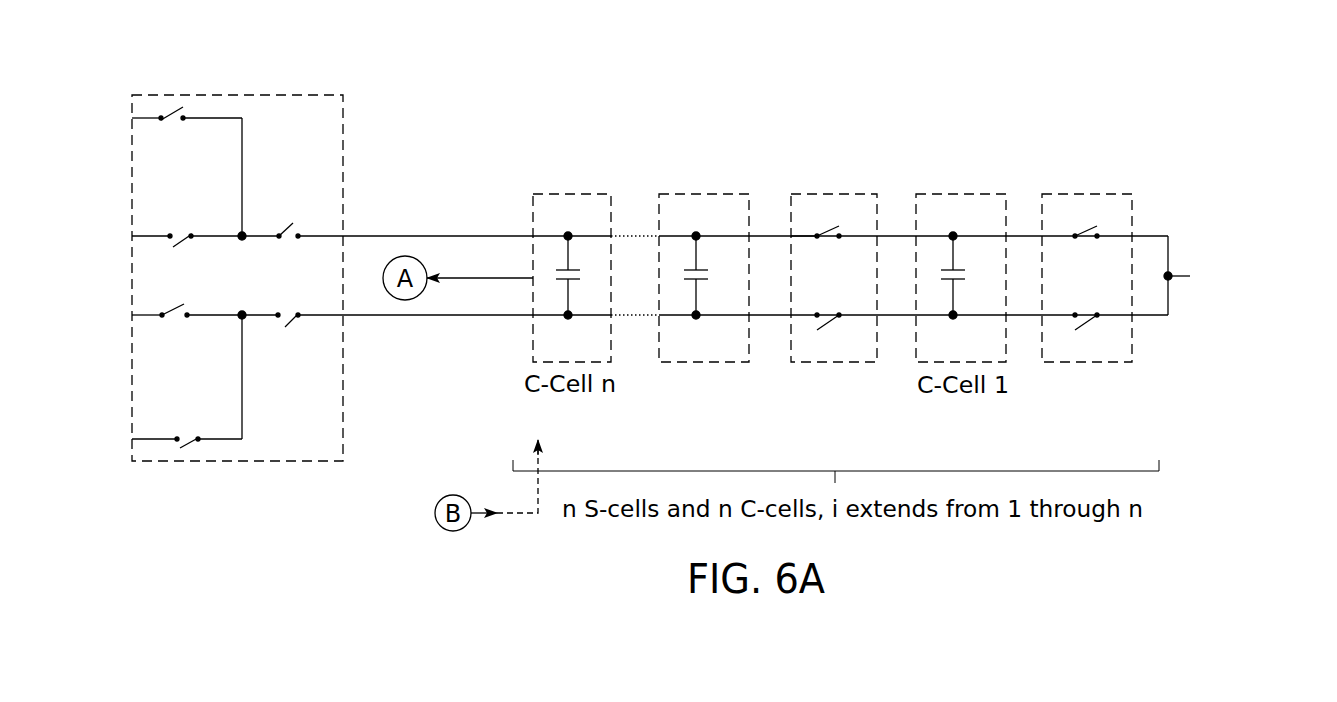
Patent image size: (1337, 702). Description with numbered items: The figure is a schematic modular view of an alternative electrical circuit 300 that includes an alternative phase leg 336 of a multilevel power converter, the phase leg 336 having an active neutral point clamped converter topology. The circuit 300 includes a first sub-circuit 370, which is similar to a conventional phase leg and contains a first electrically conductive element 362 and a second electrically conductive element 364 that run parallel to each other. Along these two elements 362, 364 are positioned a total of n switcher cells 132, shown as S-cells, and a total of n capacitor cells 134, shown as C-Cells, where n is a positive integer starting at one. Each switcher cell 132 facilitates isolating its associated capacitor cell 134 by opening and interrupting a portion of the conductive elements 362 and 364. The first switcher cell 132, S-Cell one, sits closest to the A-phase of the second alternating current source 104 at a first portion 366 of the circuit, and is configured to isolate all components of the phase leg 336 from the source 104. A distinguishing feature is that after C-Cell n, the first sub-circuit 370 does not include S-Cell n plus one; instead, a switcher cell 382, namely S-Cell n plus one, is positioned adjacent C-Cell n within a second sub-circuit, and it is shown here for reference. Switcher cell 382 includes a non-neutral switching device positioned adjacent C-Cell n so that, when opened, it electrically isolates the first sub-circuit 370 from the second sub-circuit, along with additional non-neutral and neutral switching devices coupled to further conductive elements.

The switcher cell 382 is at (226, 95).
The electrical circuit 300 is at (572, 140).
The phase leg 336 is at (717, 128).
The first sub-circuit 370 is at (869, 221).
The first electrically conductive element 362 is at (634, 224).
The second electrically conductive element 364 is at (634, 327).
The switcher cell 132 is at (815, 194).
The capacitor cell 134 is at (965, 194).
The first portion 366 is at (995, 160).
The second alternating current source 104 is at (1184, 237).